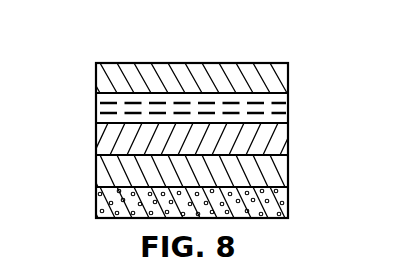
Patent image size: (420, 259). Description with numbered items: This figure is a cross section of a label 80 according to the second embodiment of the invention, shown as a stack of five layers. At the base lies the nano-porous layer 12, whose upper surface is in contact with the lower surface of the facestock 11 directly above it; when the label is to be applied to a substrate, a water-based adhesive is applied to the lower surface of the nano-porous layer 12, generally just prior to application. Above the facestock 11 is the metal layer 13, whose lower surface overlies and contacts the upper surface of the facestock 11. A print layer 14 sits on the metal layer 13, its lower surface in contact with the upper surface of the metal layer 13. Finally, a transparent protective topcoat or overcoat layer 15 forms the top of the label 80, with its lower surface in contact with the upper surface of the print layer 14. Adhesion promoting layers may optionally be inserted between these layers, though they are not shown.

The label 80 is at (215, 133).
The transparent protective topcoat or overcoat layer 15 is at (288, 78).
The print layer 14 is at (288, 109).
The metal layer 13 is at (288, 141).
The facestock 11 is at (288, 177).
The nano-porous layer 12 is at (288, 201).